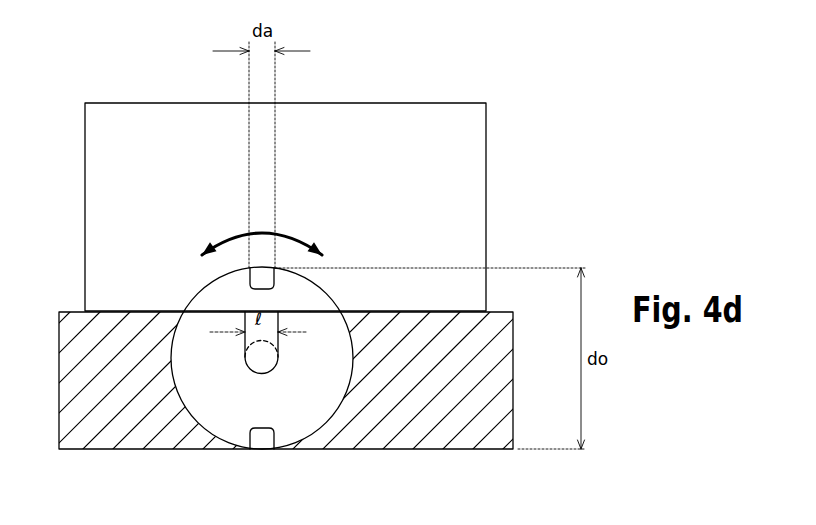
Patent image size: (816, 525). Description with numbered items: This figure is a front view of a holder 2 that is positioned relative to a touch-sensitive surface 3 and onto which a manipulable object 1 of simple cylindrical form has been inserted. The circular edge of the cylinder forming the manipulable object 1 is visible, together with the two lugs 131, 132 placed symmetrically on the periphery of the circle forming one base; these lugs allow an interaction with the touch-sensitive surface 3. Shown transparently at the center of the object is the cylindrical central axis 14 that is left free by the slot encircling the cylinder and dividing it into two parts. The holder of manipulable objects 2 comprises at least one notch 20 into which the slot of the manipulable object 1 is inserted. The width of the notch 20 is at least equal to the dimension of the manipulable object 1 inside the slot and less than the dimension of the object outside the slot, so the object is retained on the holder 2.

The manipulable object 1 is at (232, 385).
The holder 2 is at (513, 299).
The touch-sensitive surface 3 is at (453, 143).
The lug 131 is at (276, 277).
The lug 132 is at (264, 455).
The central axis 14 is at (267, 384).
The notch 20 is at (248, 300).